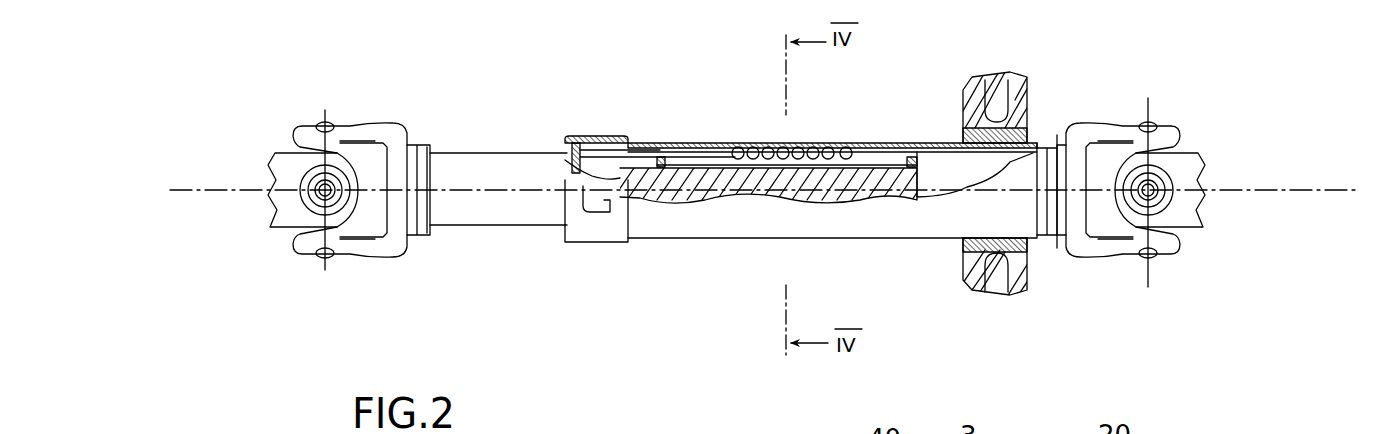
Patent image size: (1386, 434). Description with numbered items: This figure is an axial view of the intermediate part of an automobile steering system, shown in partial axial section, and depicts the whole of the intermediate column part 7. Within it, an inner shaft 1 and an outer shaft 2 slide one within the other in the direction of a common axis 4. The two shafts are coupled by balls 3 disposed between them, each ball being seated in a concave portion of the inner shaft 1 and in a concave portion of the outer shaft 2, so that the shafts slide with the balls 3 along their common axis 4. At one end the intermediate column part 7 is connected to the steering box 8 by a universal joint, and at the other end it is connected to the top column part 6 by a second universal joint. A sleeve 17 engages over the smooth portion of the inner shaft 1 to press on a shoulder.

The inner shaft 1 is at (485, 152).
The outer shaft 2 is at (708, 146).
The balls 3 is at (848, 148).
The common axis 4 is at (493, 192).
The top column part 6 is at (1285, 186).
The intermediate column part 7 is at (627, 125).
The steering box 8 is at (207, 178).
The sleeve 17 is at (593, 231).